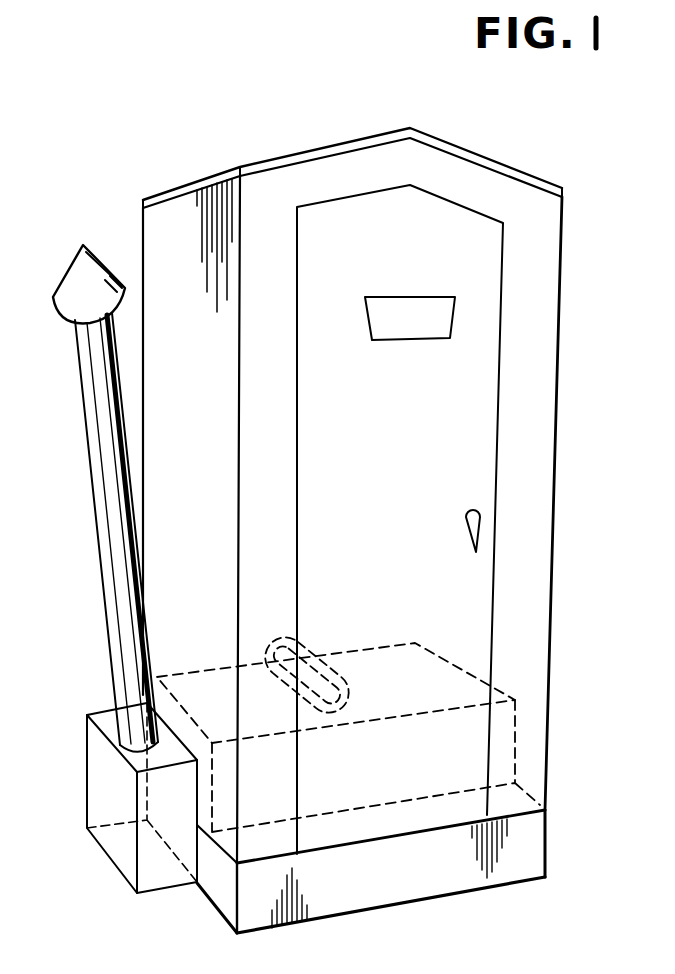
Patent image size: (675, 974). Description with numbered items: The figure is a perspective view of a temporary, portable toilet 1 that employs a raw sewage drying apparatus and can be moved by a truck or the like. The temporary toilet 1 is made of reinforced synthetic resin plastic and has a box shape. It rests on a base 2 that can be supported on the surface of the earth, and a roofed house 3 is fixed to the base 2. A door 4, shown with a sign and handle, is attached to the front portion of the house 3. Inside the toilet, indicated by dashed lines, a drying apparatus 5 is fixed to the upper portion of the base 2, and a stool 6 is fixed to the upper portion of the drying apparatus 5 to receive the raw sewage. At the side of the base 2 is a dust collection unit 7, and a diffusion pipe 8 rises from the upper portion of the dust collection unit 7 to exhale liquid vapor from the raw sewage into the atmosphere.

The temporary toilet 1 is at (276, 133).
The base 2 is at (341, 905).
The roofed house 3 is at (544, 453).
The door 4 is at (486, 400).
The drying apparatus 5 is at (420, 658).
The stool 6 is at (311, 650).
The dust collection unit 7 is at (98, 772).
The diffusion pipe 8 is at (98, 392).